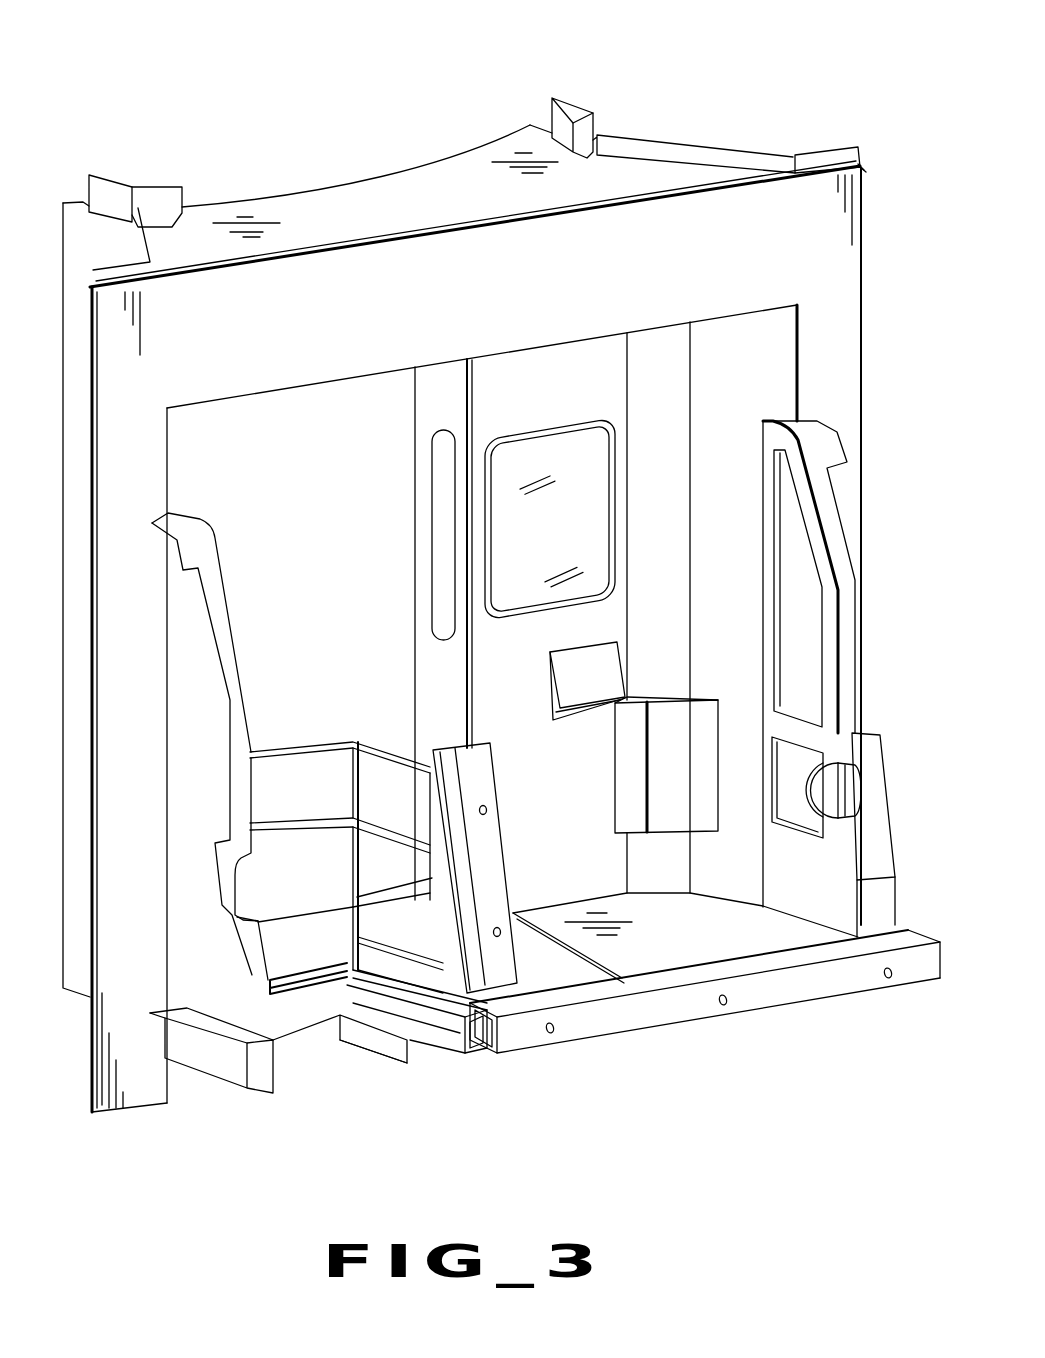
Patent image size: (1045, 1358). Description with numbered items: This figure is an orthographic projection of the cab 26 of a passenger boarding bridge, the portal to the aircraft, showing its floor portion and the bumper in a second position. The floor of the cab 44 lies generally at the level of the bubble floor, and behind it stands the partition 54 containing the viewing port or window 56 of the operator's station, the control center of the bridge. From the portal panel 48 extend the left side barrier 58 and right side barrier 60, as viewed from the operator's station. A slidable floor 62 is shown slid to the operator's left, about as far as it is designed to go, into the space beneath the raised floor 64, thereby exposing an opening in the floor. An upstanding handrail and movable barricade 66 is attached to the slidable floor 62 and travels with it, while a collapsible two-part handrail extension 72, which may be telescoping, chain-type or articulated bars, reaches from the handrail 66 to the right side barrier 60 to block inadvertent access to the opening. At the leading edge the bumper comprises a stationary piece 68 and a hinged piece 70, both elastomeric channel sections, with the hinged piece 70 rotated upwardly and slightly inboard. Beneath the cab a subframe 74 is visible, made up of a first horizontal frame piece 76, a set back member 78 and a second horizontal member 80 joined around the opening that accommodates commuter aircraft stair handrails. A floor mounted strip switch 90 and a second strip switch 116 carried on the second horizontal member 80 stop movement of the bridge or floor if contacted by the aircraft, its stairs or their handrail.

The cab 26 is at (683, 93).
The floor of the cab 44 is at (322, 959).
The portal panel 48 is at (392, 325).
The partition 54 is at (567, 815).
The viewing port or window 56 is at (522, 447).
The left side barrier 58 is at (836, 432).
The right side barrier 60 is at (225, 614).
The slidable floor 62 is at (560, 968).
The raised floor 64 is at (702, 952).
The handrail and movable barricade 66 is at (395, 755).
The stationary bumper piece 68 is at (750, 998).
The hinged bumper piece 70 is at (490, 868).
The handrail or barricade extension 72 is at (317, 743).
The subframe 74 is at (423, 1069).
The first horizontal frame piece 76 is at (457, 1050).
The set back member 78 is at (370, 1043).
The second horizontal member 80 is at (338, 1030).
The first floor mounted strip switch 90 is at (403, 1017).
The second strip switch 116 is at (292, 990).